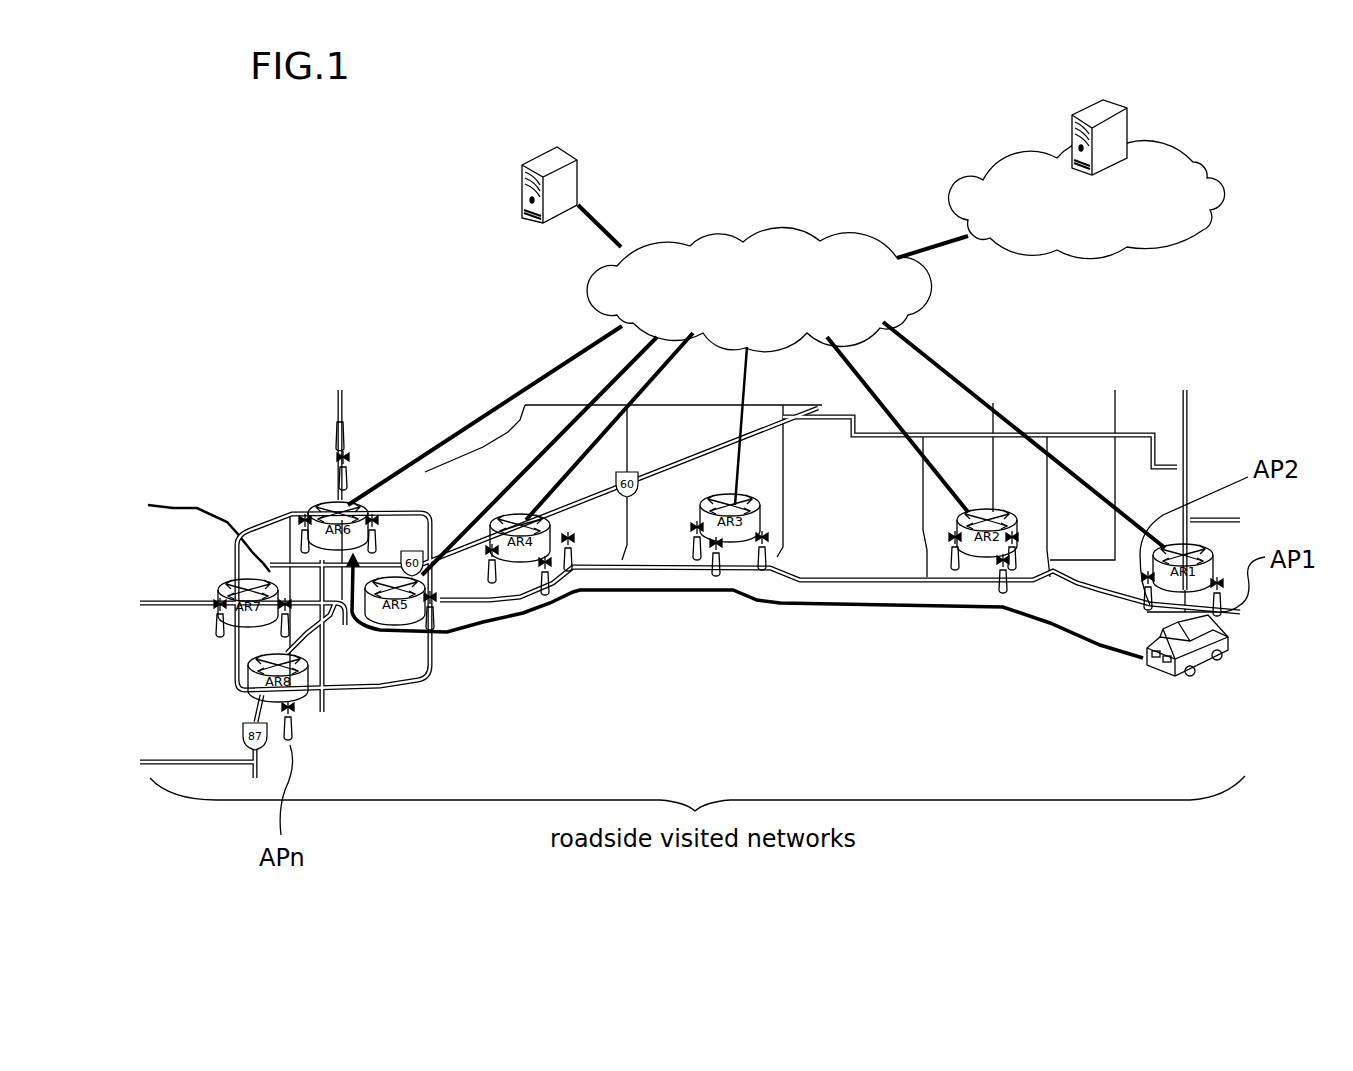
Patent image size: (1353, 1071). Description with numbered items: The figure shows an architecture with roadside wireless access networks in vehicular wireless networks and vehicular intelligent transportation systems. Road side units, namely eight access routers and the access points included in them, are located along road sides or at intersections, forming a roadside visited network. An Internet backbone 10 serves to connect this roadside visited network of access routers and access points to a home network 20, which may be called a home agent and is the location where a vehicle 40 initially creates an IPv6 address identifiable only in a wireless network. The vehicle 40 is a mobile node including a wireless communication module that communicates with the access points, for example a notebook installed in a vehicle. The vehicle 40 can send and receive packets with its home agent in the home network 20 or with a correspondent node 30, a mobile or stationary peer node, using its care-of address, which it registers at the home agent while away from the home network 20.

The Internet backbone 10 is at (780, 242).
The home network 20 is at (1095, 247).
The correspondent node 30 is at (518, 196).
The vehicle 40 is at (1197, 657).